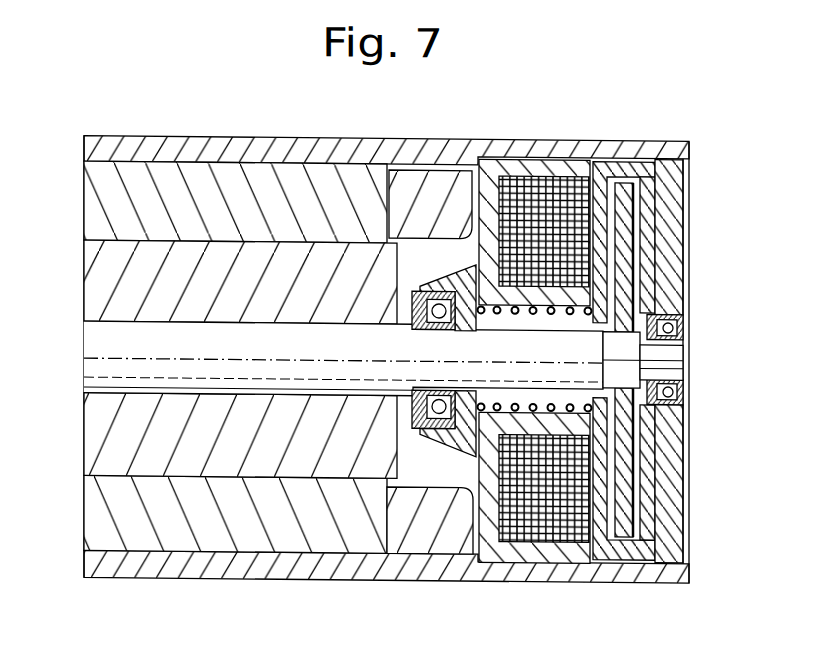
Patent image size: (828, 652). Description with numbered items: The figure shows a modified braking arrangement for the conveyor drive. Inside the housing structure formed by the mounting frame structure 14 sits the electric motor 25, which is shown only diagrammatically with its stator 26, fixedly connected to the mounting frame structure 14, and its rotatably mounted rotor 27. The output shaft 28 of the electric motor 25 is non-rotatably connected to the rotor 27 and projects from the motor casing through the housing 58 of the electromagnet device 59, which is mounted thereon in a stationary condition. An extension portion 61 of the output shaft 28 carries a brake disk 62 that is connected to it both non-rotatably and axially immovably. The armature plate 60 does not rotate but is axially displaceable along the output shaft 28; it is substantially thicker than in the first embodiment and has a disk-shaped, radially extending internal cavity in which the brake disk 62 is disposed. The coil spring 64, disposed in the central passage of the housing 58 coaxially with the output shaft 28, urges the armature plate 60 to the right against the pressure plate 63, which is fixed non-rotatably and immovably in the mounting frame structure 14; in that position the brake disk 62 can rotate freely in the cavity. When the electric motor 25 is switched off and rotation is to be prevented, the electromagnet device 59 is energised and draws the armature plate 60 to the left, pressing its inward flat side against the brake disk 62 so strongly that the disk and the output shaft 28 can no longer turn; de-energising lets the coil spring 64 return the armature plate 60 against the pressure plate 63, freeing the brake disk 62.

The mounting frame structure 14 is at (122, 566).
The electric motor 25 is at (409, 478).
The stator 26 is at (94, 530).
The rotor 27 is at (92, 453).
The output shaft 28 is at (84, 365).
The housing 58 is at (503, 157).
The electromagnet device 59 is at (540, 188).
The armature plate 60 is at (625, 166).
The extension portion 61 is at (627, 350).
The brake disk 62 is at (633, 238).
The pressure plate 63 is at (684, 182).
The coil spring 64 is at (478, 289).